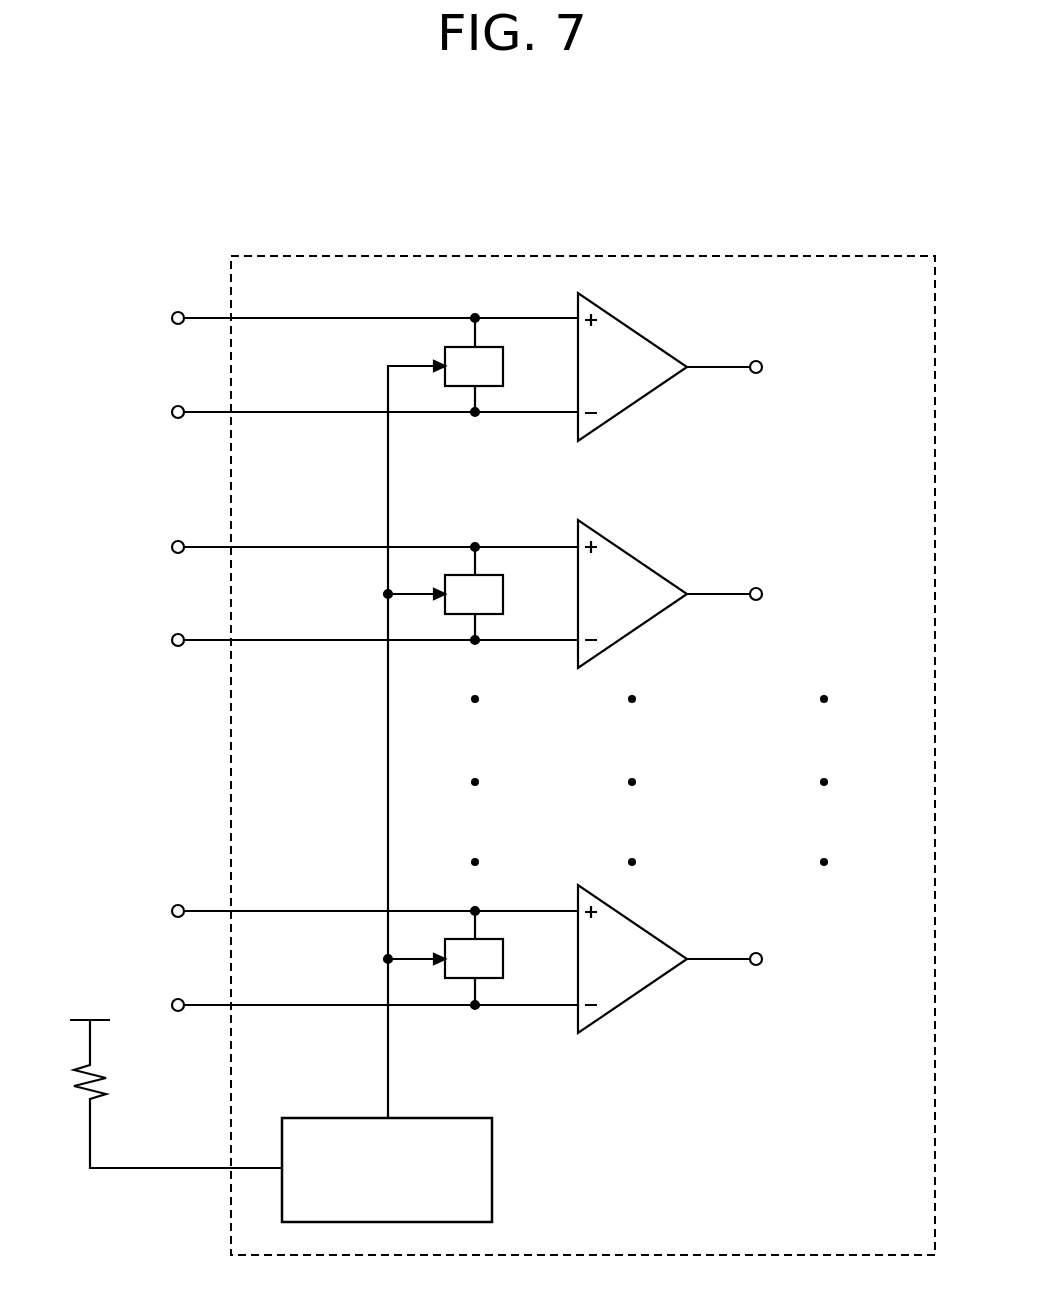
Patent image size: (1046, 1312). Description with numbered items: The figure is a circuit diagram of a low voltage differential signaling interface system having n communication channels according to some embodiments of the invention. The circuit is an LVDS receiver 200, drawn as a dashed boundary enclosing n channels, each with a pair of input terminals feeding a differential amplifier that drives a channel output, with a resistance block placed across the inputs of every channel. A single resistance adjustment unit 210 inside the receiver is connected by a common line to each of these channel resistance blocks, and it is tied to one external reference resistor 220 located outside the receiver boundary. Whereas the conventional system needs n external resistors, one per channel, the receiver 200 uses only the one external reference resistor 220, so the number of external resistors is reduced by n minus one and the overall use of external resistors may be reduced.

The LVDS receiver 200 is at (582, 256).
The resistance adjustment unit 210 is at (493, 1168).
The external reference resistor 220 is at (95, 1072).